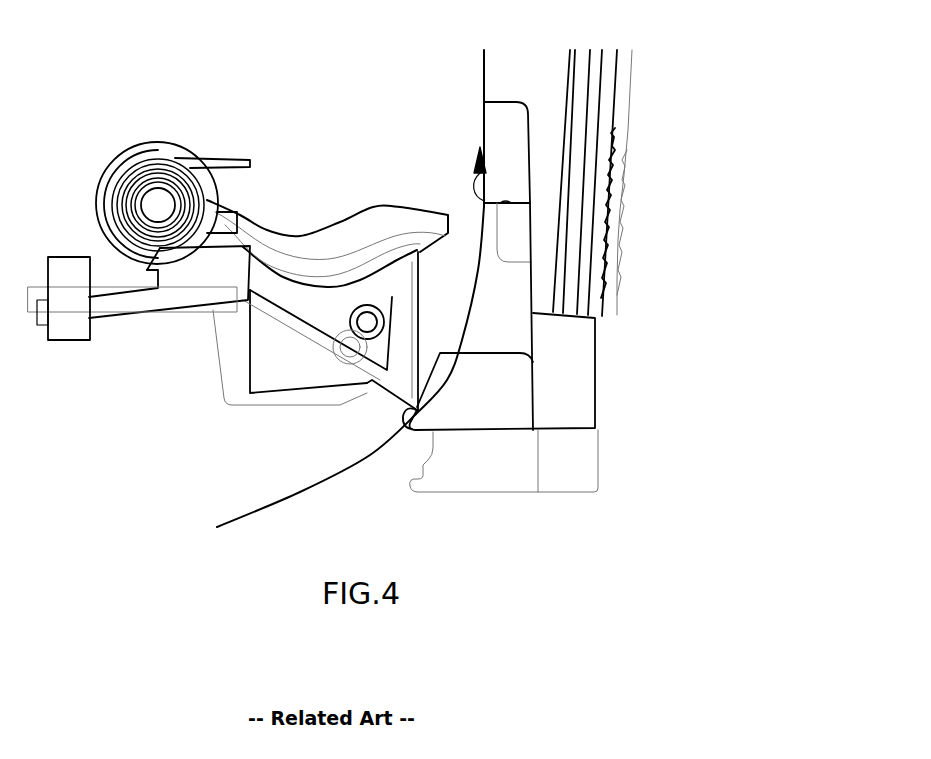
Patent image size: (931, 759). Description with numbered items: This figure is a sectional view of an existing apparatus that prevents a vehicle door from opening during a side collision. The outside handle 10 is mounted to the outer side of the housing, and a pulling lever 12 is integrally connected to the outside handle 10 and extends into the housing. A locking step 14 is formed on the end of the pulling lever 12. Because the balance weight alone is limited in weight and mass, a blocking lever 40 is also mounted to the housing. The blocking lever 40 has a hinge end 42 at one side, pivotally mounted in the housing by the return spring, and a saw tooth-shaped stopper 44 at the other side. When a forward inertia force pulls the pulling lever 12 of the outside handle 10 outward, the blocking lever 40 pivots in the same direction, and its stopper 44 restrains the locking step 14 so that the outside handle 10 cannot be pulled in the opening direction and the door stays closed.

The outside handle 10 is at (484, 80).
The pulling lever 12 is at (482, 414).
The locking step 14 is at (411, 425).
The blocking lever 40 is at (272, 222).
The hinge end 42 is at (123, 158).
The saw tooth-shaped stopper 44 is at (372, 402).